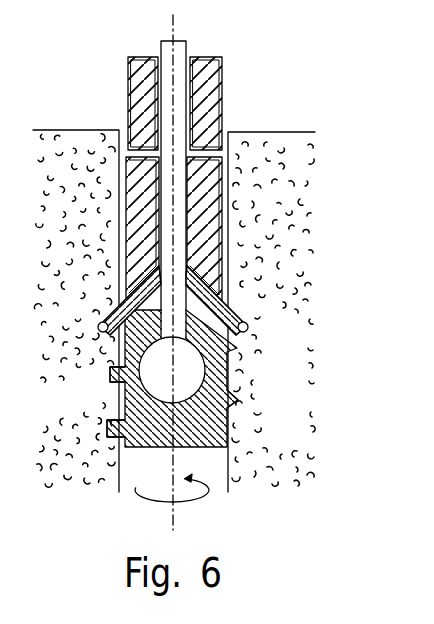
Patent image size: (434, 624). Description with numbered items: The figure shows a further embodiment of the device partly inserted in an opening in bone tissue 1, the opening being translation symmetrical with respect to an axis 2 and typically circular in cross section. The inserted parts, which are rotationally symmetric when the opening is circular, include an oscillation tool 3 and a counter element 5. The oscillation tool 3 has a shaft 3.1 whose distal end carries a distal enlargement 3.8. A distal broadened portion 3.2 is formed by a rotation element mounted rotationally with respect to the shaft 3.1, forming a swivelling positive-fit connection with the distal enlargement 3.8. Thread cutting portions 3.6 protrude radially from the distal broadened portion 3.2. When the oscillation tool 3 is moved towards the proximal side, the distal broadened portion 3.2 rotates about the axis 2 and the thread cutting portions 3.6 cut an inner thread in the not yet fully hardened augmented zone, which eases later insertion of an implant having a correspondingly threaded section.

The bone tissue 1 is at (296, 170).
The axis 2 is at (172, 517).
The oscillation tool 3 is at (162, 43).
The shaft 3.1 is at (166, 95).
The distal broadened portion 3.2 is at (193, 430).
The thread cutting portions 3.6 is at (110, 380).
The distal enlargement 3.8 is at (192, 375).
The counter element 5 is at (222, 93).